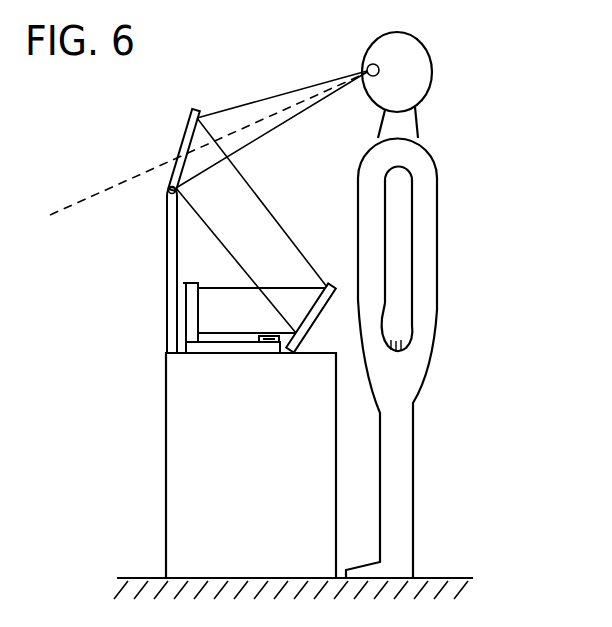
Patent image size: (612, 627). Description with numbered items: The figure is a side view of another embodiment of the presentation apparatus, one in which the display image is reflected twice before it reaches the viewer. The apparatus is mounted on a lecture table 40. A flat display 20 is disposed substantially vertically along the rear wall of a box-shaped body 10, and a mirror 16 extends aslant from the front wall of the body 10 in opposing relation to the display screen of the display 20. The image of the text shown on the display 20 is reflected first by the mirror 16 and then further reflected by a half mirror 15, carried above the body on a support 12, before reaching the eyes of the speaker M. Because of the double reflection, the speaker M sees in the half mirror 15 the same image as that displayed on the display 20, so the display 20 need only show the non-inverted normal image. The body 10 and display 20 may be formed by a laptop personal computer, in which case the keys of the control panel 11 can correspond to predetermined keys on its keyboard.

The box-shaped body 10 is at (215, 354).
The control panel 11 is at (272, 347).
The support post 12 is at (167, 258).
The half mirror 15 is at (189, 118).
The mirror 16 is at (323, 355).
The flat display 20 is at (190, 302).
The lecture table 40 is at (166, 432).
The speaker M is at (440, 204).